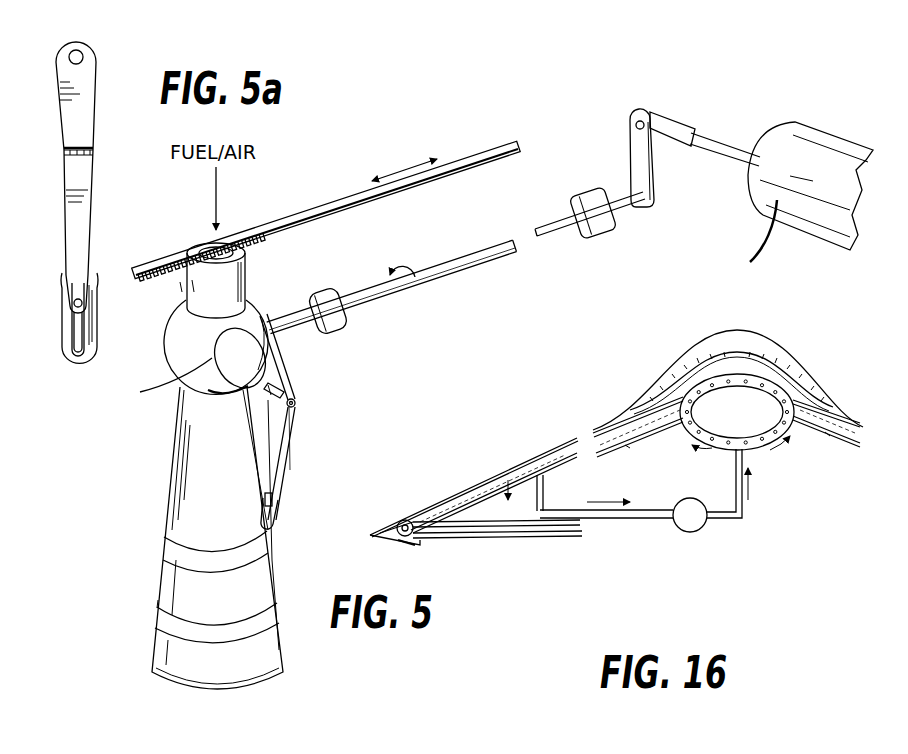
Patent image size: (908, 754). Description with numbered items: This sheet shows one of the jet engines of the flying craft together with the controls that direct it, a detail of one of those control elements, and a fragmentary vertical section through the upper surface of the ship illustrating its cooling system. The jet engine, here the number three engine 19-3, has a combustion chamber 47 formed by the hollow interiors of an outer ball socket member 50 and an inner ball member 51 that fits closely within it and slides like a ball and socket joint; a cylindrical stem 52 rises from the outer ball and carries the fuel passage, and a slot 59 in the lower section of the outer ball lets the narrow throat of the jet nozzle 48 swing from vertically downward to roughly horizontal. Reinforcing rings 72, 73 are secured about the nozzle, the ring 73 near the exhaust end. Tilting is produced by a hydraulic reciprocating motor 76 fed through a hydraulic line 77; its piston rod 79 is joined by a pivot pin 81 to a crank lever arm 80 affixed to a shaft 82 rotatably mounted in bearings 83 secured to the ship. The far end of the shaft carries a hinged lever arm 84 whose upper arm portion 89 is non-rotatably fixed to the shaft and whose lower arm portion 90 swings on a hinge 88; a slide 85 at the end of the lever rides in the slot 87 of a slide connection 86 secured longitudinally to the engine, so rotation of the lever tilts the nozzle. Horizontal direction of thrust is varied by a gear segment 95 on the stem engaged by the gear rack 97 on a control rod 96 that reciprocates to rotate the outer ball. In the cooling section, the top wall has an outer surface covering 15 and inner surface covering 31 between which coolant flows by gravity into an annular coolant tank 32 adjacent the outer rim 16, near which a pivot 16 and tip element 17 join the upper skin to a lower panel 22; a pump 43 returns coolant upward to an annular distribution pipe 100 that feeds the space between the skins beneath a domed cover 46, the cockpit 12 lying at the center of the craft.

In FIG. 16, the cockpit 12 is at (800, 386).
In FIG. 16, the outer surface covering 15 is at (543, 453).
In FIG. 16, the outer rim or shield 16 is at (393, 520).
In FIG. 16, the tip clip 17 is at (413, 544).
In FIG. 5, the number 3 engine 19-3 is at (180, 500).
In FIG. 16, the lower blade panel 22 is at (505, 540).
In FIG. 16, the inner surface covering 31 is at (635, 444).
In FIG. 16, the annular coolant tank 32 is at (545, 498).
In FIG. 16, the pump 43 is at (690, 532).
In FIG. 16, the dome cover 46 is at (776, 340).
In FIG. 5, the combustion chamber 47 is at (160, 342).
In FIG. 5, the jet nozzle 48 is at (172, 600).
In FIG. 5, the outer ball socket member 50 is at (257, 300).
In FIG. 5, the inner ball member 51 is at (232, 392).
In FIG. 5, the cylindrical stem 52 is at (248, 263).
In FIG. 5, the slot 59 is at (190, 375).
In FIG. 5, the reinforcing ring 72 is at (178, 572).
In FIG. 5, the reinforcing ring 73 is at (277, 617).
In FIG. 5, the hydraulic reciprocating motor 76 is at (815, 145).
In FIG. 5, the hydraulic line 77 is at (748, 262).
In FIG. 5, the piston rod 79 is at (728, 146).
In FIG. 5, the crank lever arm 80 is at (634, 160).
In FIG. 5, the pivot pin 81 is at (636, 120).
In FIG. 5a, the shaft 82 is at (83, 58).
In FIG. 5, the shaft 82 is at (513, 240).
In FIG. 5, the bearing 83 is at (334, 294).
In FIG. 5a, the hinged lever arm 84 is at (68, 224).
In FIG. 5, the hinged lever arm 84 is at (290, 432).
In FIG. 5a, the slide 85 is at (72, 303).
In FIG. 5, the slide 85 is at (278, 489).
In FIG. 5a, the slide connection 86 is at (98, 282).
In FIG. 5, the slide connection 86 is at (278, 521).
In FIG. 5a, the slot 87 is at (70, 340).
In FIG. 5a, the hinge 88 is at (64, 150).
In FIG. 5, the hinge 88 is at (296, 401).
In FIG. 5, the upper arm portion 89 is at (280, 374).
In FIG. 5, the lower arm portion 90 is at (288, 464).
In FIG. 5, the gear segment 95 is at (178, 283).
In FIG. 5, the control rod 96 is at (474, 152).
In FIG. 5, the gear rack 97 is at (243, 236).
In FIG. 16, the annular distribution pipe 100 is at (728, 450).